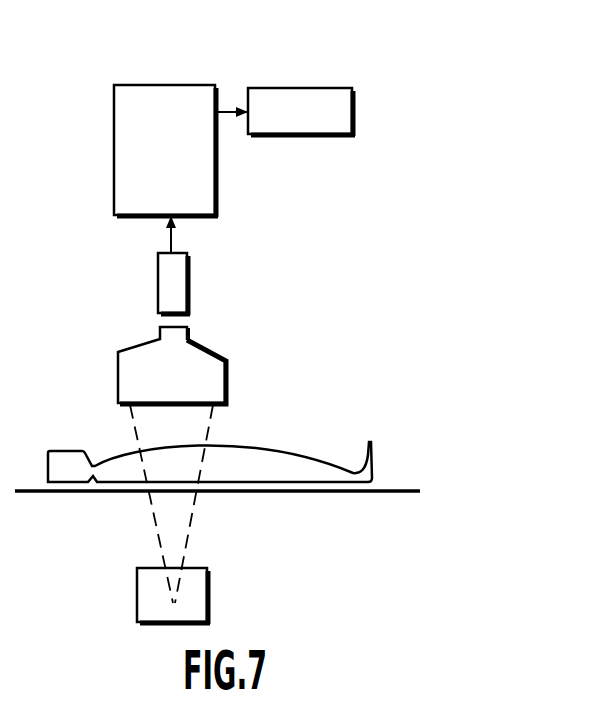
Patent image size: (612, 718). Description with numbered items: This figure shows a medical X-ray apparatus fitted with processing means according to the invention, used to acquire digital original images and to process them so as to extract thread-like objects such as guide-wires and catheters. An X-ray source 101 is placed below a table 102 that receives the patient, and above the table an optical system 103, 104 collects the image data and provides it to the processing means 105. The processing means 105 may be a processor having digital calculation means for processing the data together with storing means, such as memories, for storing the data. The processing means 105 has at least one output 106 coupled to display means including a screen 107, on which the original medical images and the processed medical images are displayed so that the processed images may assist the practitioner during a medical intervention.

The X-ray source 101 is at (134, 598).
The table 102 is at (91, 499).
The optical system 103 is at (128, 347).
The optical system 104 is at (155, 283).
The processing means 105 is at (140, 136).
The output 106 is at (233, 93).
The screen 107 is at (358, 100).